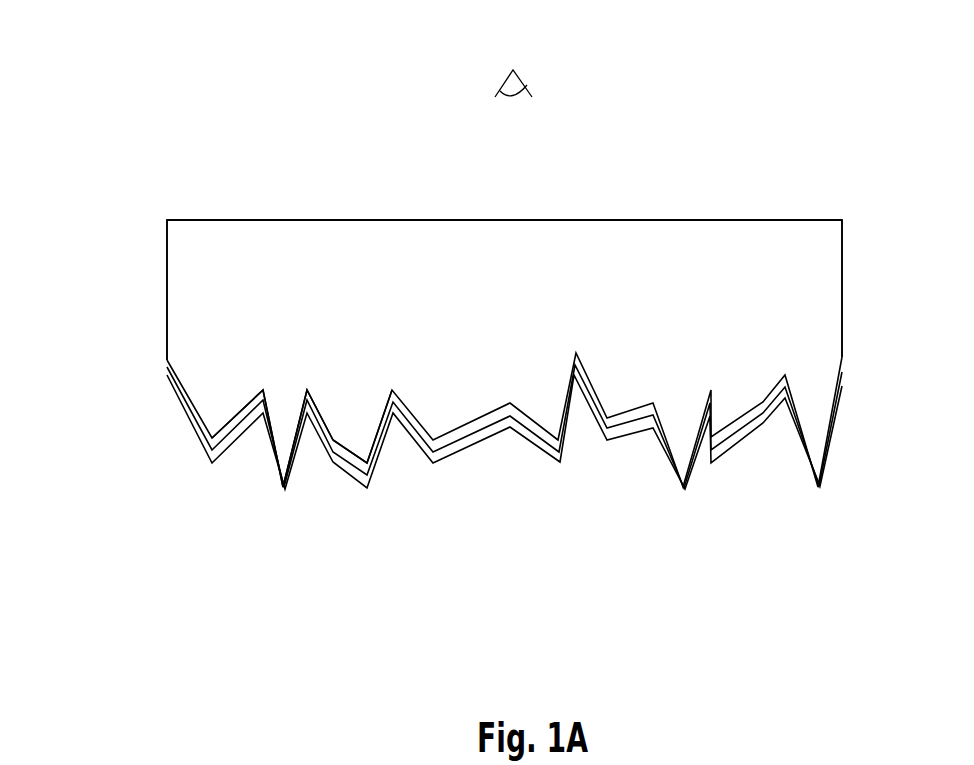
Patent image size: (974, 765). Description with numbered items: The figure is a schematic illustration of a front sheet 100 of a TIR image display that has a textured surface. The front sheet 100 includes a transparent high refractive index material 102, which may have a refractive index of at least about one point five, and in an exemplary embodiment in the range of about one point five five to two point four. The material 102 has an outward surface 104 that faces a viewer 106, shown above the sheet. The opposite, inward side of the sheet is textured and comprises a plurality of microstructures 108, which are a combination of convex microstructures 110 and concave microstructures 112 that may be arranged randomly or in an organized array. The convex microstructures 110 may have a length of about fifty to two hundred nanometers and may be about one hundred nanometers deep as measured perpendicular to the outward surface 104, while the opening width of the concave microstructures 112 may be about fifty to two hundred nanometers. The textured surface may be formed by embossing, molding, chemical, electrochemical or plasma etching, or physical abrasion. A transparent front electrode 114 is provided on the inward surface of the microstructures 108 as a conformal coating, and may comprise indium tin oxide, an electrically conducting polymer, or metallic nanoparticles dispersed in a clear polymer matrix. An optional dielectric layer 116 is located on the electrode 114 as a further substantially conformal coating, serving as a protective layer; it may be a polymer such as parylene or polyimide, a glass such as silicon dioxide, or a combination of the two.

The front sheet 100 is at (737, 178).
The transparent high refractive index material 102 is at (305, 303).
The outward surface 104 is at (237, 220).
The viewer 106 is at (523, 81).
The microstructures 108 is at (557, 433).
The convex microstructures 110 is at (526, 476).
The concave microstructures 112 is at (250, 456).
The transparent front electrode 114 is at (473, 419).
The dielectric layer 116 is at (637, 433).